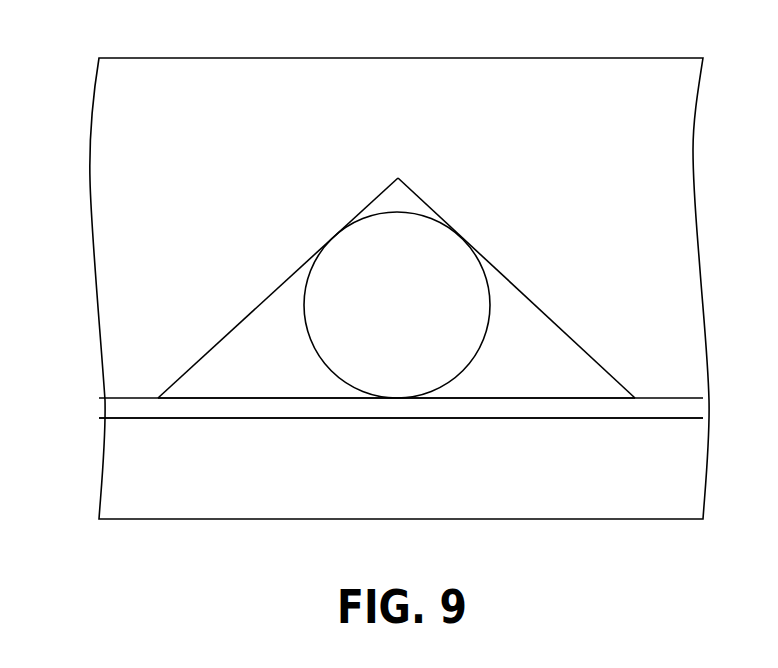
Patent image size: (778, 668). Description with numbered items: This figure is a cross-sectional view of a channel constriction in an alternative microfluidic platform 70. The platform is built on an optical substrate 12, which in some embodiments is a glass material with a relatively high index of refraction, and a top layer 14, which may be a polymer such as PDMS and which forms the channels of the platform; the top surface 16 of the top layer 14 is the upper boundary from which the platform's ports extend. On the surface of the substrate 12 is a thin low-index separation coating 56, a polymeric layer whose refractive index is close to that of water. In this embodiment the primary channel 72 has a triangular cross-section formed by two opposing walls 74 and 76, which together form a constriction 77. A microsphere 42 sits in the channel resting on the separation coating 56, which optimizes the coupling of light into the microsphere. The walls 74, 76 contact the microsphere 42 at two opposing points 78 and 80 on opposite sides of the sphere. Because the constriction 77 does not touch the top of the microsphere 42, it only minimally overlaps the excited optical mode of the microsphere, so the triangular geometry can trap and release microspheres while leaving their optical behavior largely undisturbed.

The platform 70 is at (399, 269).
The top surface 16 is at (665, 58).
The top layer 14 is at (415, 122).
The optical substrate 12 is at (414, 481).
The separation coating 56 is at (695, 408).
The primary channel 72 is at (396, 288).
The wall 74 is at (223, 337).
The wall 76 is at (575, 342).
The microsphere 42 is at (410, 318).
The contact point 78 is at (324, 223).
The contact point 80 is at (470, 222).
The constriction 77 is at (482, 141).